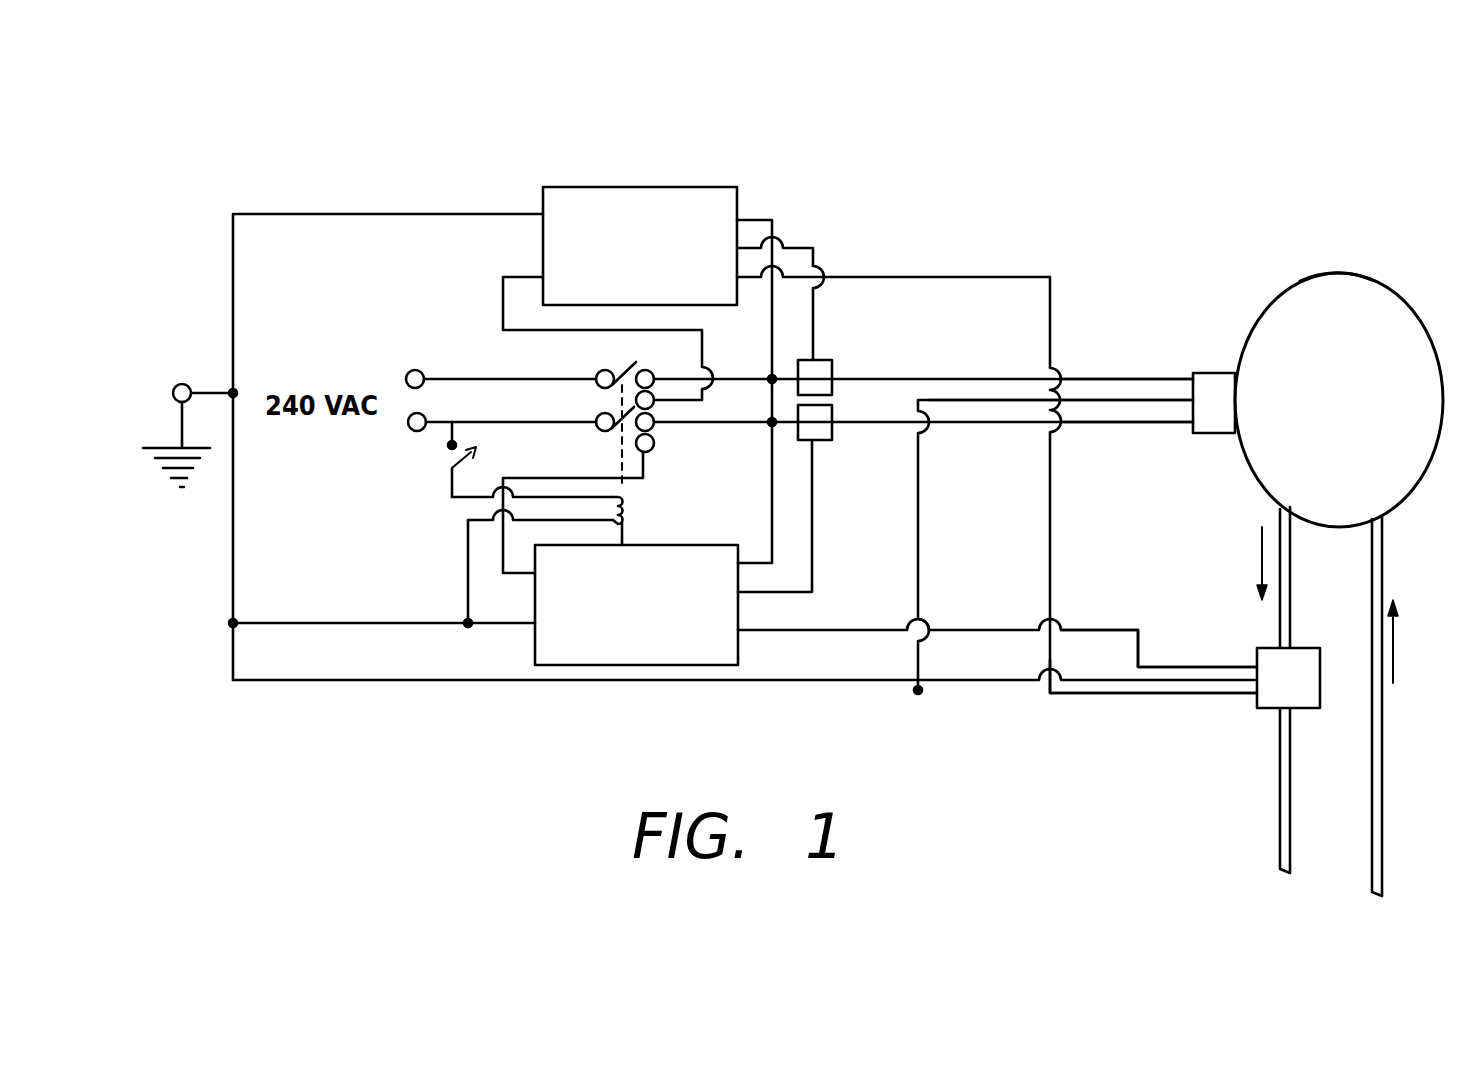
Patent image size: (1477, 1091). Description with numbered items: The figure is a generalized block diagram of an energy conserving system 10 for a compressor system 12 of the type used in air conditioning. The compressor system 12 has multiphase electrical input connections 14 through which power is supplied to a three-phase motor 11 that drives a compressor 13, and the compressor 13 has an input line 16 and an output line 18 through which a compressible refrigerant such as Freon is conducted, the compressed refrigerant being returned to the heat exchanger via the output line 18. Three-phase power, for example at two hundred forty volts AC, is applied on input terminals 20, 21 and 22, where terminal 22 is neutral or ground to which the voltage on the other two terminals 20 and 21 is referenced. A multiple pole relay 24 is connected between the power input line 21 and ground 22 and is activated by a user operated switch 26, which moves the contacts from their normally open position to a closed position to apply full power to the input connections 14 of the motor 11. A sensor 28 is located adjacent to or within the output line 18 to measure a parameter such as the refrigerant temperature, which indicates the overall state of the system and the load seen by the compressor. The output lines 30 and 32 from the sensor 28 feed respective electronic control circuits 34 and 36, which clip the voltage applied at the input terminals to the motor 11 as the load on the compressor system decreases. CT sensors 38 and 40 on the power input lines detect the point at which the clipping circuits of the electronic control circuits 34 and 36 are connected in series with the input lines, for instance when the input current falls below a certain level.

The energy conserving system 10 is at (1110, 252).
The three-phase motor 11 is at (1210, 372).
The compressor system 12 is at (1452, 398).
The compressor 13 is at (1372, 275).
The multiphase electrical input connections 14 is at (1190, 426).
The input line 16 is at (1383, 568).
The output line 18 is at (1291, 580).
The input terminal 20 is at (417, 370).
The input terminal 21 is at (418, 432).
The input terminal 22 is at (186, 385).
The multiple pole relay 24 is at (638, 525).
The user operated switch 26 is at (450, 468).
The sensor 28 is at (1258, 709).
The output line 30 is at (1058, 700).
The output line 32 is at (1138, 630).
The electronic control circuit 34 is at (637, 184).
The electronic control circuit 36 is at (535, 603).
The CT sensor 38 is at (832, 364).
The CT sensor 40 is at (826, 442).